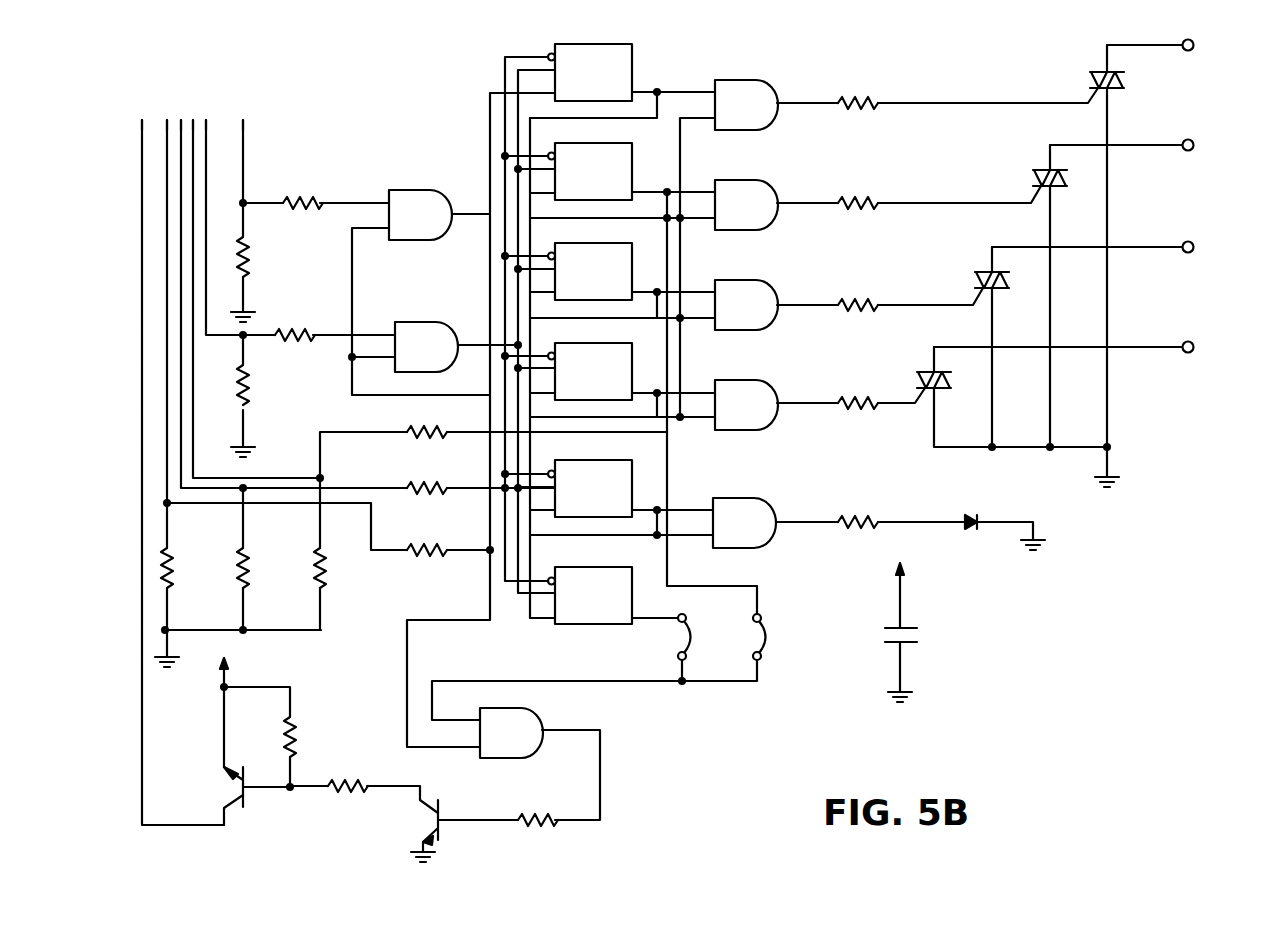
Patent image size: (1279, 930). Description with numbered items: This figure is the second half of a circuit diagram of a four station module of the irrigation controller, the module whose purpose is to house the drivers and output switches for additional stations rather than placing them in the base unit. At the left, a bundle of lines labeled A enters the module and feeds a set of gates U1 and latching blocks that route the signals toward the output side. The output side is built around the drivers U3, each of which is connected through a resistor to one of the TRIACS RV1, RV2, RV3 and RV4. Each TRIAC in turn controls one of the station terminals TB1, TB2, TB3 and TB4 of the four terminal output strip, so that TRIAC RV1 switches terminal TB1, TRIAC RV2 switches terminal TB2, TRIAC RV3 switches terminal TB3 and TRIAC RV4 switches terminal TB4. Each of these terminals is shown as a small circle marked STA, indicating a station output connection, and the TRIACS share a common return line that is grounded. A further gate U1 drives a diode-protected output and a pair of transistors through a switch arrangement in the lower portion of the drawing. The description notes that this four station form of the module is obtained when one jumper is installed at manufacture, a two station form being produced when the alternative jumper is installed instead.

The input signal bus A is at (262, 117).
The AND gate U1 is at (582, 474).
The drivers U3 is at (746, 255).
The TRIAC RV1 is at (1120, 92).
The TRIAC RV2 is at (1036, 166).
The TRIAC RV3 is at (977, 267).
The TRIAC RV4 is at (922, 366).
The station terminal TB1 is at (1161, 32).
The station terminal TB2 is at (1129, 131).
The station terminal TB3 is at (1100, 233).
The station terminal TB4 is at (1071, 333).
The station output terminal STA is at (1227, 196).